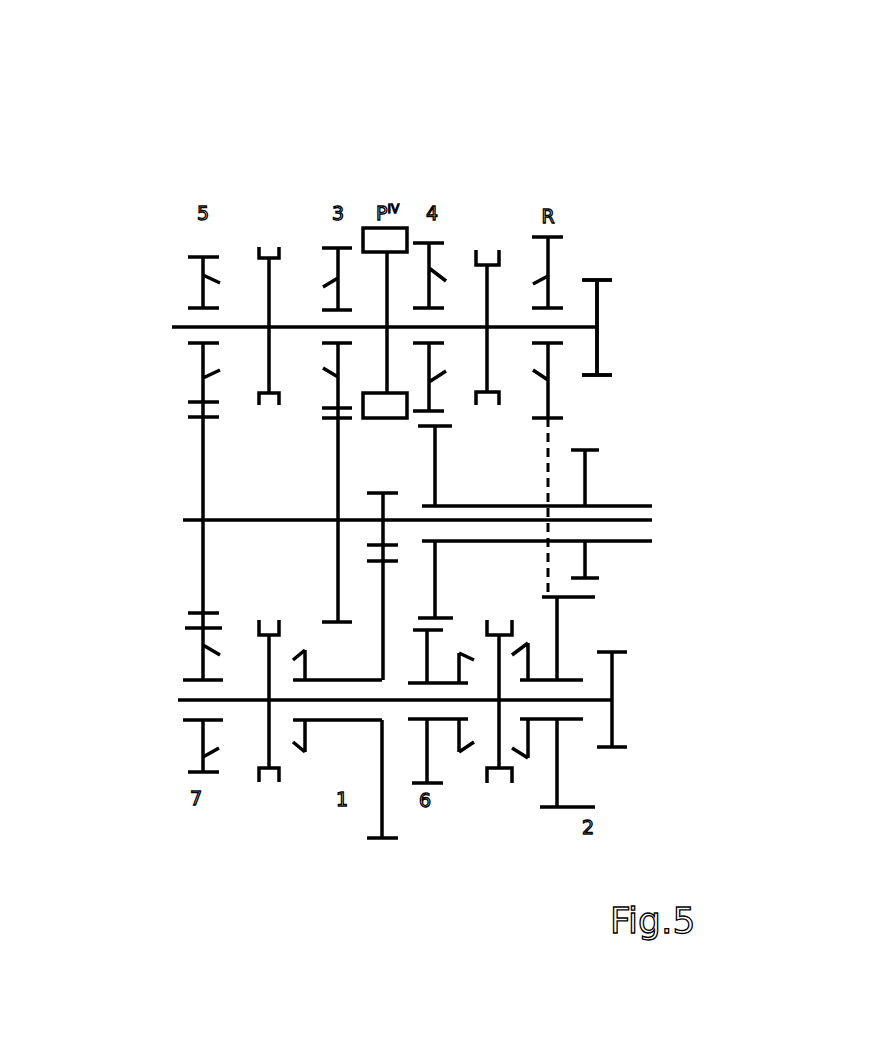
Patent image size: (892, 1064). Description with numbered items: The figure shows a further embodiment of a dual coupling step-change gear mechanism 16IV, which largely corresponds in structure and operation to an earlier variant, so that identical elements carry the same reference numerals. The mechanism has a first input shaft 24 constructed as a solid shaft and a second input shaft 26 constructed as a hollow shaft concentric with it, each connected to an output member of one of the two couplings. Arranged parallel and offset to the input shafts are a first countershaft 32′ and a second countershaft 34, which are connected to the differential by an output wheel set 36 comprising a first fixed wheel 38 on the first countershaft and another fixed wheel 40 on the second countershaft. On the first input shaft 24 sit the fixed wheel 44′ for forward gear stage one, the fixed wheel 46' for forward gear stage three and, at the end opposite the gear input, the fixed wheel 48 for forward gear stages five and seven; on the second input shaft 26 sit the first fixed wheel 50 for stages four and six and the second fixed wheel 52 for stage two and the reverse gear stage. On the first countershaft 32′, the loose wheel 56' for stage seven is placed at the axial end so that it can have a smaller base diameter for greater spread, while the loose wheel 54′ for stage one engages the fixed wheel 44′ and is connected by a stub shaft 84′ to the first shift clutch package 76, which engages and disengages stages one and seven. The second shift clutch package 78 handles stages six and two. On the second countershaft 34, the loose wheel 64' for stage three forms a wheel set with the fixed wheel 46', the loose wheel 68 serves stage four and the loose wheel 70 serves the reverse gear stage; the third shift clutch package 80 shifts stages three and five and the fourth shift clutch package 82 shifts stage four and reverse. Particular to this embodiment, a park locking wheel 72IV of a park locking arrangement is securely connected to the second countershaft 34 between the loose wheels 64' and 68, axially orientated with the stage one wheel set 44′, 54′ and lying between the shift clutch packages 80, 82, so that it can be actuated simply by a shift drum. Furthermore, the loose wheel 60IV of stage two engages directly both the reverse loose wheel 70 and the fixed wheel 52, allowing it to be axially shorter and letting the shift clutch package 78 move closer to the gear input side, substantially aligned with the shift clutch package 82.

The step-change gear mechanism 16IV is at (672, 143).
The first input shaft 24 is at (652, 520).
The second input shaft 26 is at (627, 505).
The first countershaft 32′ is at (187, 700).
The second countershaft 34 is at (182, 327).
The output wheel set 36 is at (600, 262).
The first fixed wheel 38 is at (612, 677).
The fixed wheel 40 is at (598, 312).
The fixed wheel 44′ is at (383, 470).
The fixed wheel 46' is at (304, 520).
The fixed wheel 48 is at (203, 477).
The first fixed wheel 50 is at (437, 468).
The second fixed wheel 52 is at (587, 476).
The loose wheel 54′ is at (380, 803).
The loose wheel 56' is at (145, 760).
The loose wheel 60IV is at (558, 778).
The loose wheel 64' is at (313, 218).
The loose wheel 68 is at (432, 267).
The loose wheel 70 is at (550, 263).
The park locking wheel 72IV is at (382, 291).
The first shift clutch package 76 is at (266, 795).
The second shift clutch package 78 is at (499, 797).
The third shift clutch package 80 is at (266, 240).
The fourth shift clutch package 82 is at (510, 222).
The stub shaft 84′ is at (338, 720).